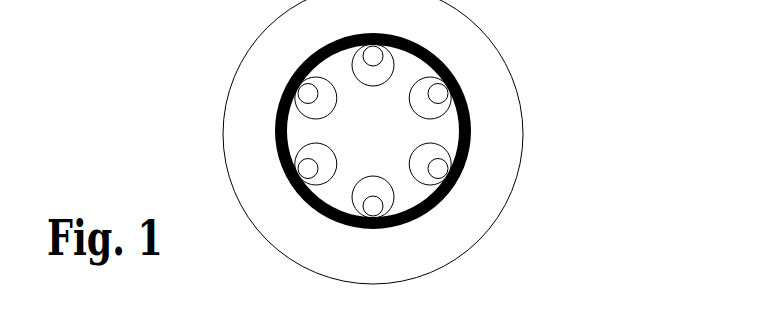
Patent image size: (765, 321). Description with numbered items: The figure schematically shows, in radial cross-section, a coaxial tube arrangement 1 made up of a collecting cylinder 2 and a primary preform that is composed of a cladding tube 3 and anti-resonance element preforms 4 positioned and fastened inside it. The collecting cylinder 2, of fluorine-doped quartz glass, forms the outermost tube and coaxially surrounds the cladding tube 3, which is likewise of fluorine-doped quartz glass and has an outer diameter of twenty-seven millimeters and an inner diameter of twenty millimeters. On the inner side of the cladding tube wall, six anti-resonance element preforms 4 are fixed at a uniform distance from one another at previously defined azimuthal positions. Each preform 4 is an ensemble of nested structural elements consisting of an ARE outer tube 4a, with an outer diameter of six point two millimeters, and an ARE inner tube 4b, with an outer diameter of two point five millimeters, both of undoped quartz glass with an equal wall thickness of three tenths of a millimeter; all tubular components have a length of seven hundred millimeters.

The coaxial tube arrangement 1 is at (517, 58).
The collecting cylinder 2 is at (467, 208).
The cladding tube 3 is at (472, 143).
The anti-resonance element preforms 4 is at (297, 97).
The ARE outer tube 4a is at (448, 112).
The ARE inner tube 4b is at (567, 73).